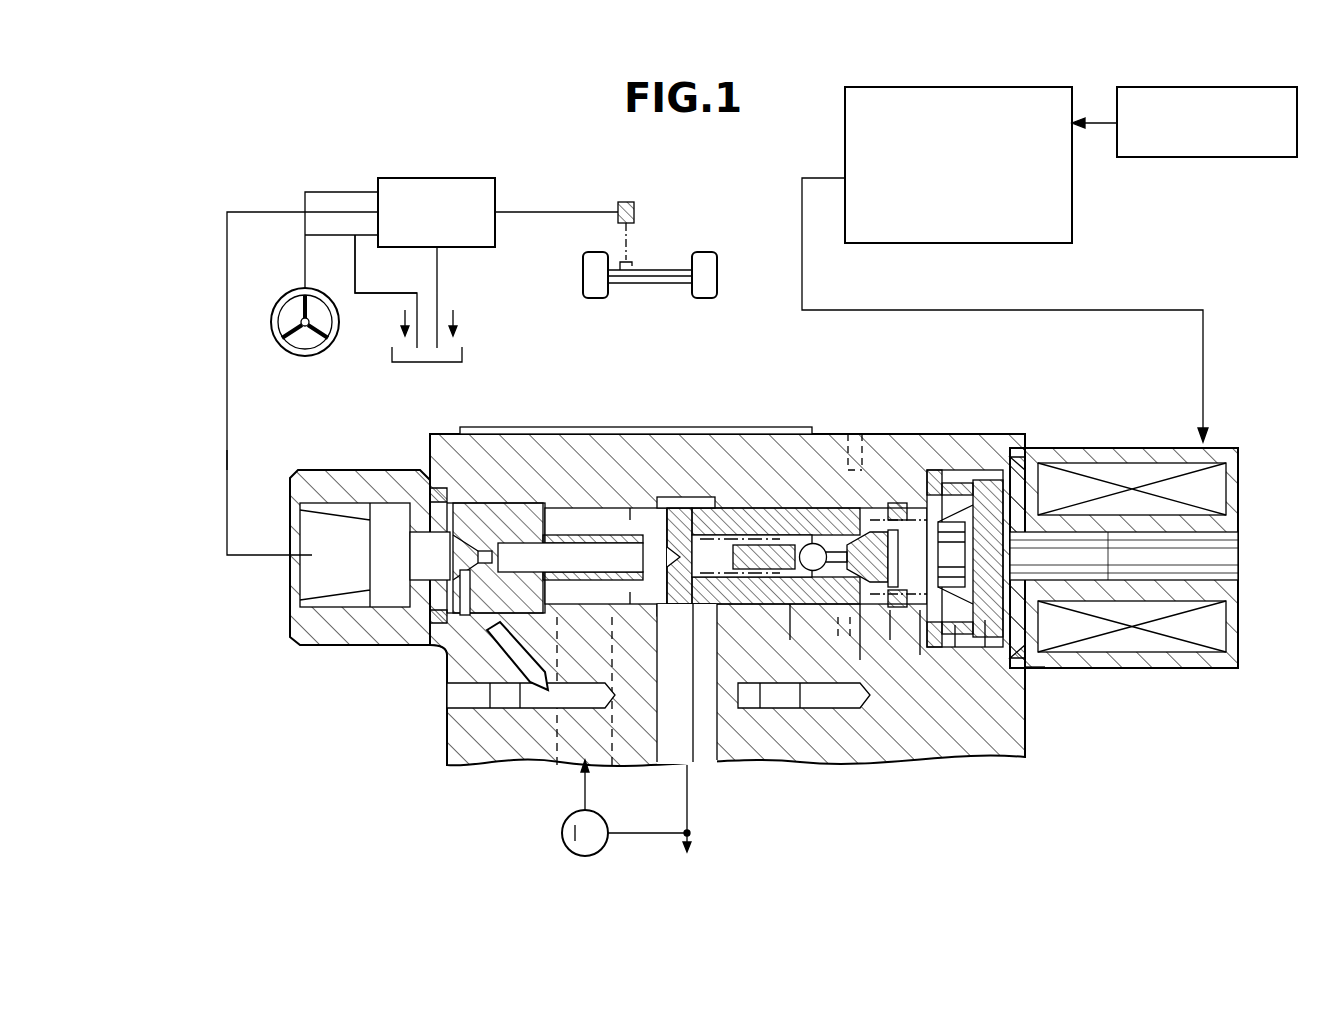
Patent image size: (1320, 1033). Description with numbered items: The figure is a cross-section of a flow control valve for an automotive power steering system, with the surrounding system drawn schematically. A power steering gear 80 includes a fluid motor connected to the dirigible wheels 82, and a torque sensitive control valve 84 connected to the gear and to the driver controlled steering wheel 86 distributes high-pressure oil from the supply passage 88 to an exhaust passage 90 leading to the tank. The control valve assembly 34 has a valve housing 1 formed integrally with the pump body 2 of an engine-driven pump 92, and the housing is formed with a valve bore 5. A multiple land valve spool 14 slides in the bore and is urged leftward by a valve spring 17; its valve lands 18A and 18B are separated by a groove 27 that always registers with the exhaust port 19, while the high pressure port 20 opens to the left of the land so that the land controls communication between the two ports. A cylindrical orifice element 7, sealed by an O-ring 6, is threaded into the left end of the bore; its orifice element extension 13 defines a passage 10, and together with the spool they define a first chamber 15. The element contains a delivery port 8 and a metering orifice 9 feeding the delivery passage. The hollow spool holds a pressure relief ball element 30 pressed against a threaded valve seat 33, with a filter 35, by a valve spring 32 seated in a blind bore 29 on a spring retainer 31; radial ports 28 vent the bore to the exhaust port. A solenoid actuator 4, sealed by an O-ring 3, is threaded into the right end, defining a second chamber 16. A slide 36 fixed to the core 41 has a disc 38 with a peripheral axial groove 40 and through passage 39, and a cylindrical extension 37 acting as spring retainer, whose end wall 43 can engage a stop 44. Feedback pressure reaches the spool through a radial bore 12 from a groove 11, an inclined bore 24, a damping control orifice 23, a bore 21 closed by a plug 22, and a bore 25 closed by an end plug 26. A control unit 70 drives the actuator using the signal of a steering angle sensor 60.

The valve housing 1 is at (500, 436).
The pump body 2 is at (462, 762).
The O-ring 3 is at (1030, 500).
The actuator 4 is at (1200, 668).
The valve bore 5 is at (756, 492).
The O-ring 6 is at (480, 535).
The orifice element 7 is at (300, 642).
The delivery port 8 is at (315, 525).
The metering orifice 9 is at (485, 550).
The passage 10 is at (540, 548).
The groove 11 is at (460, 610).
The radial bore 12 is at (345, 615).
The orifice element extension 13 is at (632, 508).
The valve spool 14 is at (793, 505).
The first chamber 15 is at (575, 522).
The second chamber 16 is at (935, 540).
The valve spring 17 is at (955, 530).
The valve land 18A is at (803, 498).
The valve land 18B is at (662, 496).
The exhaust port 19 is at (670, 750).
The high pressure port 20 is at (610, 750).
The bore 21 is at (485, 700).
The plug 22 is at (450, 745).
The control orifice 23 is at (530, 700).
The inclined bore 24 is at (490, 645).
The bore 25 is at (842, 690).
The end plug 26 is at (855, 434).
The groove 27 is at (700, 710).
The radial ports 28 is at (733, 710).
The blind bore 29 is at (703, 500).
The pressure relief ball element 30 is at (790, 642).
The spring retainer 31 is at (817, 522).
The valve spring 32 is at (770, 690).
The valve seat 33 is at (868, 662).
The control valve assembly 34 is at (766, 516).
The filter 35 is at (920, 657).
The slide 36 is at (1030, 660).
The cylindrical extension 37 is at (895, 642).
The disc 38 is at (958, 649).
The through passage 39 is at (985, 520).
The peripheral axial groove 40 is at (992, 649).
The core 41 is at (1080, 560).
The end wall 43 is at (905, 525).
The stop 44 is at (878, 528).
The steering angle sensor 60 is at (1262, 157).
The control unit 70 is at (1072, 230).
The power steering gear 80 is at (495, 182).
The dirigible wheels 82 is at (712, 255).
The torque sensitive control valve 84 is at (305, 222).
The steering wheel 86 is at (280, 342).
The supply passage 88 is at (230, 462).
The exhaust passage 90 is at (372, 293).
The pump 92 is at (562, 838).